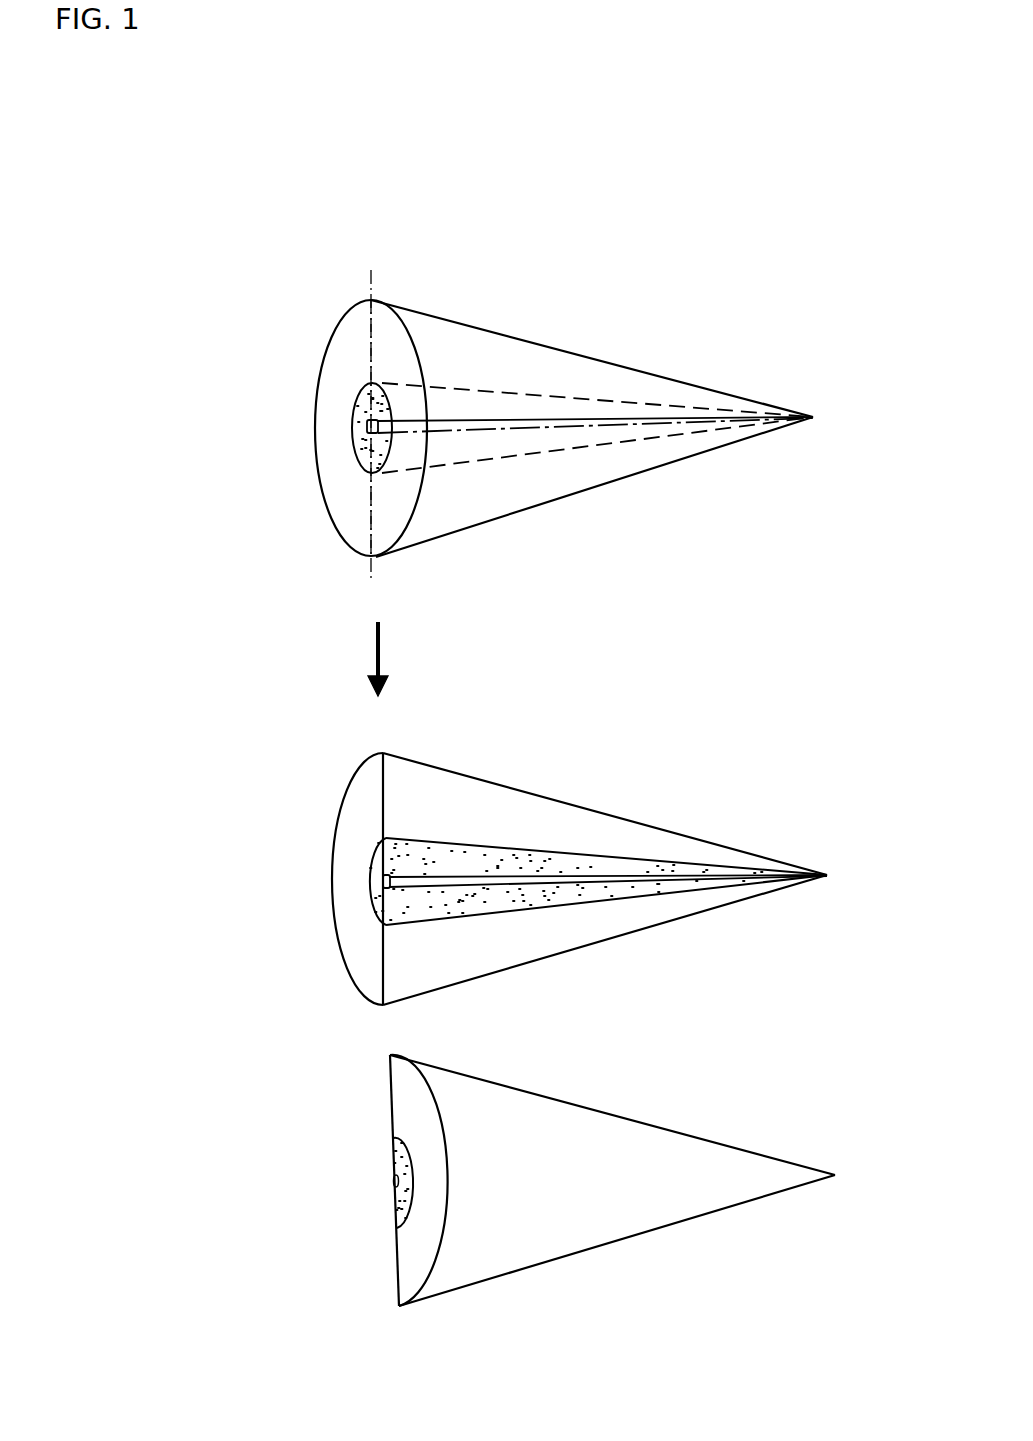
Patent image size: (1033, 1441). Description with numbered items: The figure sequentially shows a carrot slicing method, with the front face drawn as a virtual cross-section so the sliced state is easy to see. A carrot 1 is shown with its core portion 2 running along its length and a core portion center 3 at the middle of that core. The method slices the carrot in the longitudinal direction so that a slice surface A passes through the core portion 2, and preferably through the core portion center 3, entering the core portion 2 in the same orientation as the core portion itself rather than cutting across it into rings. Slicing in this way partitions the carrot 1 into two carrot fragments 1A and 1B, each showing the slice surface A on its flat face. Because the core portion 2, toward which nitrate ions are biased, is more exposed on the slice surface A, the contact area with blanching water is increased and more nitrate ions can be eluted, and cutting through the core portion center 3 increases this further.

The carrot 1 is at (447, 332).
The core portion 2 is at (573, 404).
The core portion center 3 is at (520, 432).
The slice surface A is at (367, 342).
The carrot fragment 1A is at (350, 815).
The carrot fragment 1B is at (665, 1143).